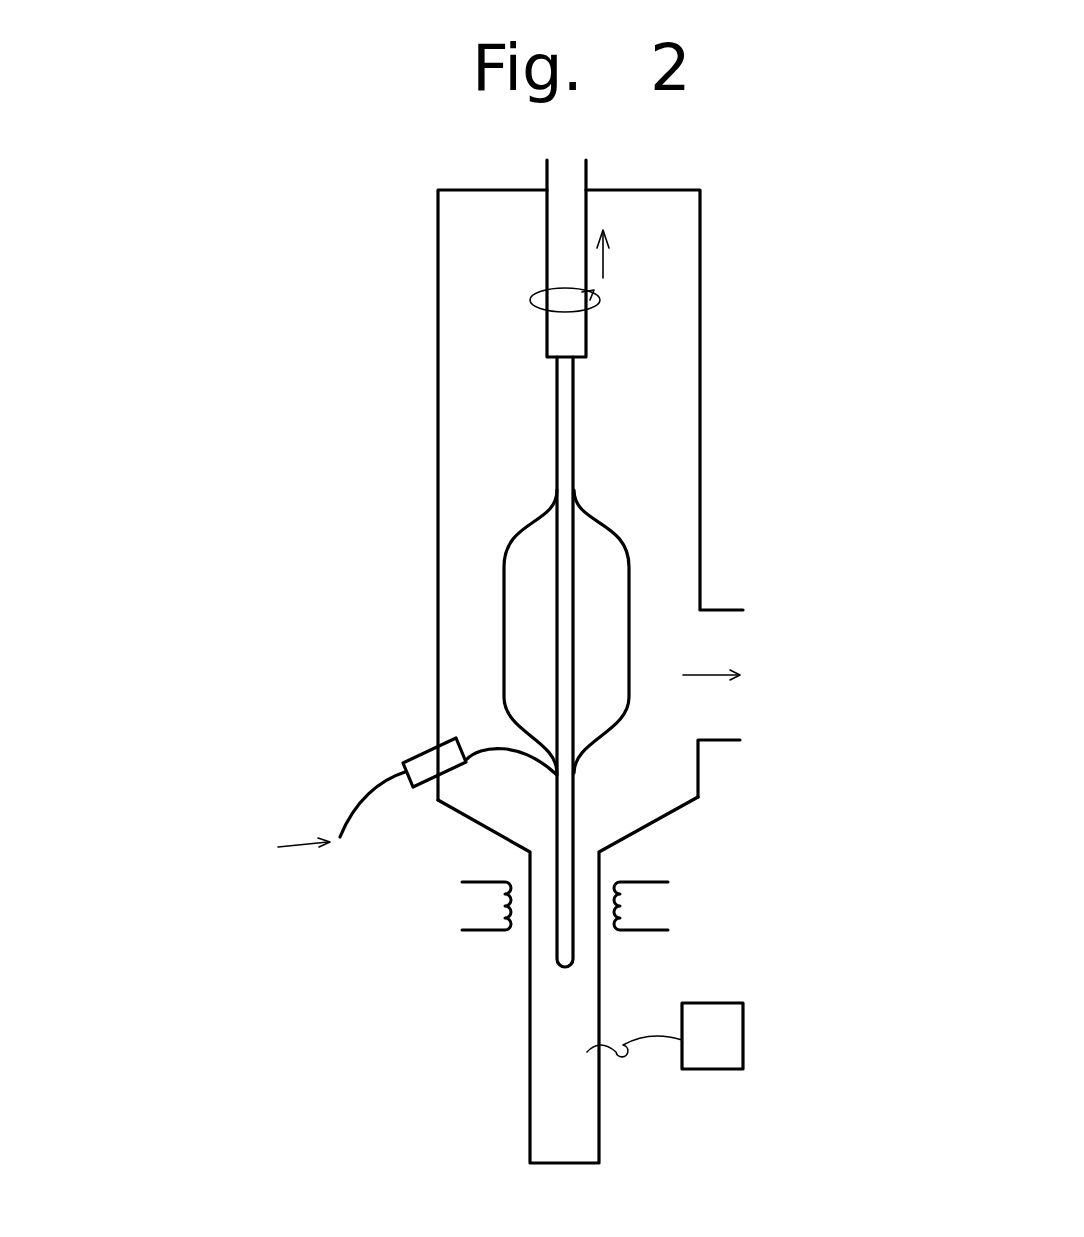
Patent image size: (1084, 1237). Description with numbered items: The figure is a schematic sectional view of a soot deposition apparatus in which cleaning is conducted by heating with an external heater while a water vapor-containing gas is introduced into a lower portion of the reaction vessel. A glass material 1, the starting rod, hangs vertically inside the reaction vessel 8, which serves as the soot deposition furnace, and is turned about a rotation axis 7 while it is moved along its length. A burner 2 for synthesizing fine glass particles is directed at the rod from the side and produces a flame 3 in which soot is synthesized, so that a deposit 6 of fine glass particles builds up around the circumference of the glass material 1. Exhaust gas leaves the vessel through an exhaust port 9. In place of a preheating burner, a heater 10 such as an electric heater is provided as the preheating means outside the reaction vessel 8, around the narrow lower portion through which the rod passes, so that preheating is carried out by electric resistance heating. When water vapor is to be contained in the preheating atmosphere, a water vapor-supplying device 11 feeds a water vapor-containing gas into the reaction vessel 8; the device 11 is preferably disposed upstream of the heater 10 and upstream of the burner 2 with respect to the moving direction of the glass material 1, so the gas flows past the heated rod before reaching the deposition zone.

The glass material 1 is at (567, 588).
The burner for synthesizing fine glass particles 2 is at (427, 758).
The flame 3 is at (498, 740).
The deposit of fine glass particles 6 is at (602, 528).
The rotation axis 7 is at (586, 272).
The reaction vessel (soot deposition furnace) 8 is at (700, 580).
The exhaust port 9 is at (722, 727).
The heater 10 is at (480, 930).
The water vapor-supplying device 11 is at (743, 1028).